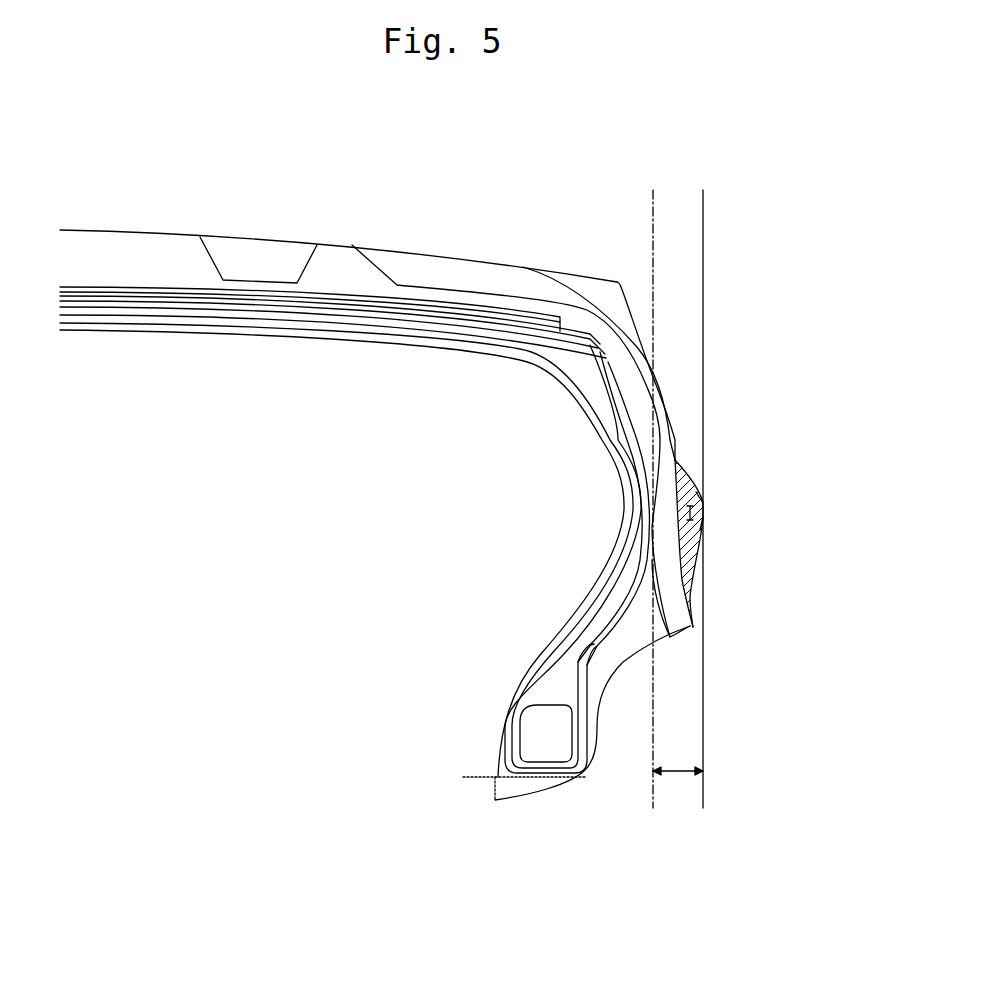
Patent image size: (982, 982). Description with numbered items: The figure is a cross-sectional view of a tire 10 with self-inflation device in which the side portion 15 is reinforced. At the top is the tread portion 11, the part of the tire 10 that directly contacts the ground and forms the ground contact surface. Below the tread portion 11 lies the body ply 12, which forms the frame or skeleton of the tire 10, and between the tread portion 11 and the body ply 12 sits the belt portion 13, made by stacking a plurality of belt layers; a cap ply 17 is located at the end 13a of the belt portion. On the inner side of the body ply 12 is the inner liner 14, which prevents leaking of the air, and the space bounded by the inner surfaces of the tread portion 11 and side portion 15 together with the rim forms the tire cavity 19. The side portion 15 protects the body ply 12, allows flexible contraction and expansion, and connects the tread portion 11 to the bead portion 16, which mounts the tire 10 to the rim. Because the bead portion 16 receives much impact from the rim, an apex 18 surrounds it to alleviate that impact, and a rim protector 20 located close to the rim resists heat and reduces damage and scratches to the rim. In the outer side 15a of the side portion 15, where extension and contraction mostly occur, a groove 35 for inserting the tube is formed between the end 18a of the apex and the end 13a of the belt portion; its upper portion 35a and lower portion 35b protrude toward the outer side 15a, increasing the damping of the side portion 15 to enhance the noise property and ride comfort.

The tire 10 is at (416, 212).
The tread portion 11 is at (165, 232).
The body ply 12 is at (137, 313).
The belt portion 13 is at (100, 305).
The end of the belt portion 13a is at (603, 337).
The inner liner 14 is at (207, 335).
The side portion 15 is at (705, 562).
The outer side of the side portion 15a is at (678, 450).
The bead portion 16 is at (543, 737).
The cap ply 17 is at (603, 343).
The apex 18 is at (565, 685).
The end of the apex 18a is at (592, 645).
The tire cavity 19 is at (378, 425).
The rim protector 20 is at (693, 628).
The groove 35 is at (689, 513).
The upper portion of the groove 35a is at (703, 503).
The lower portion of the groove 35b is at (703, 517).